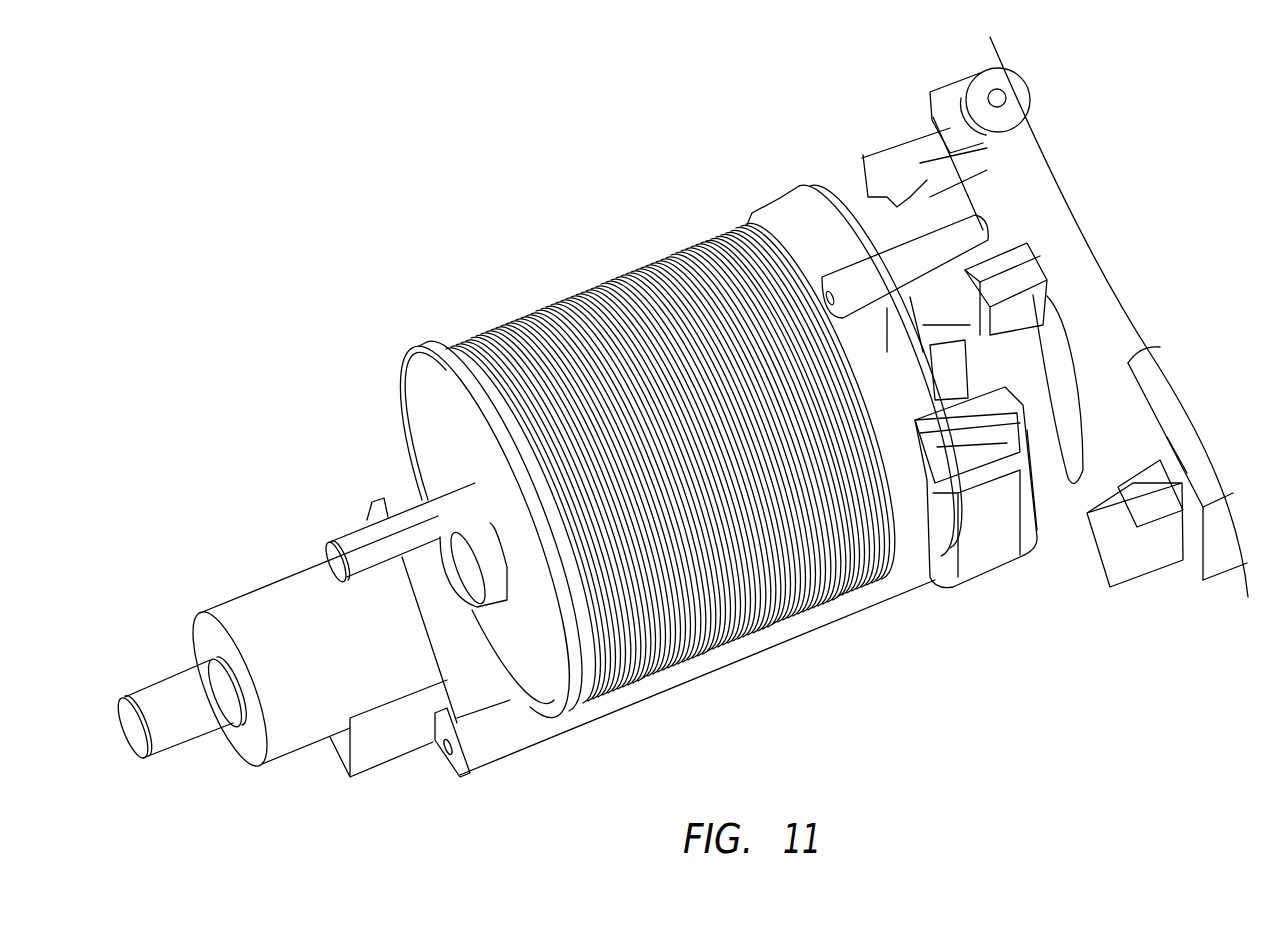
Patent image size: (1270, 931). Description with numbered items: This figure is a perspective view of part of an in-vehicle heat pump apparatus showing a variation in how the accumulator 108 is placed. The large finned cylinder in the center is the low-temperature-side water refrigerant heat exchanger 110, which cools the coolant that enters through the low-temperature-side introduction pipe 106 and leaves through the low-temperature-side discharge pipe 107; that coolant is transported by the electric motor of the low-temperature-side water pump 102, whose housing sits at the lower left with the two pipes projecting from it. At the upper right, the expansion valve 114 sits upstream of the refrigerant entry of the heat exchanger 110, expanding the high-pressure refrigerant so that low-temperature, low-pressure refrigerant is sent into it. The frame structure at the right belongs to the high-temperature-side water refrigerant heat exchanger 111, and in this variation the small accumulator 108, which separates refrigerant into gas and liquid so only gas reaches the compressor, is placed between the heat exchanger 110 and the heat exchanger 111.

The low-temperature-side water pump 102 is at (280, 745).
The low-temperature-side introduction pipe 106 is at (357, 538).
The low-temperature-side discharge pipe 107 is at (162, 695).
The accumulator 108 is at (983, 547).
The low-temperature-side water refrigerant heat exchanger 110 is at (592, 297).
The high-temperature-side water refrigerant heat exchanger 111 is at (1050, 187).
The expansion valve 114 is at (977, 83).